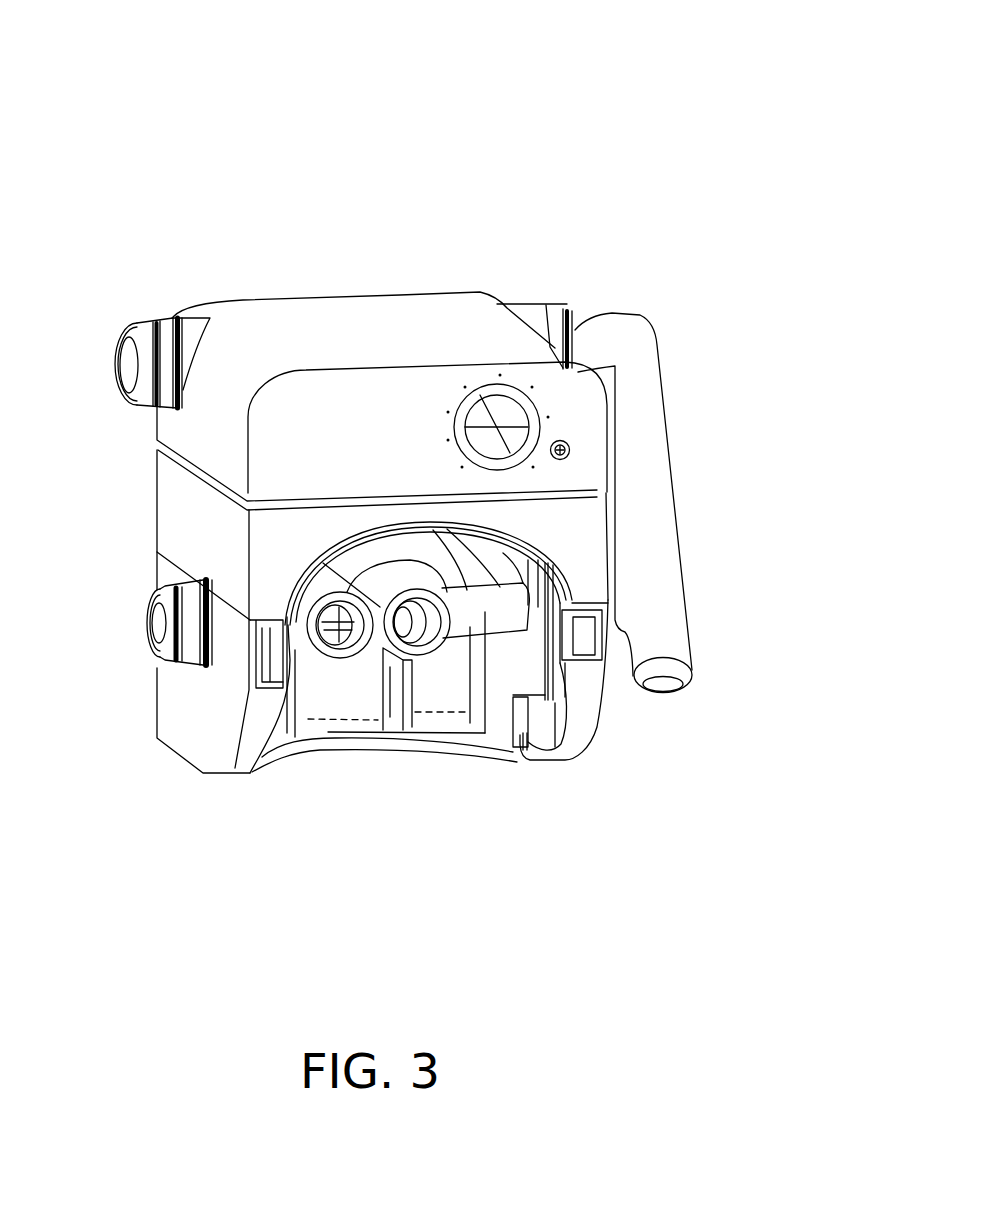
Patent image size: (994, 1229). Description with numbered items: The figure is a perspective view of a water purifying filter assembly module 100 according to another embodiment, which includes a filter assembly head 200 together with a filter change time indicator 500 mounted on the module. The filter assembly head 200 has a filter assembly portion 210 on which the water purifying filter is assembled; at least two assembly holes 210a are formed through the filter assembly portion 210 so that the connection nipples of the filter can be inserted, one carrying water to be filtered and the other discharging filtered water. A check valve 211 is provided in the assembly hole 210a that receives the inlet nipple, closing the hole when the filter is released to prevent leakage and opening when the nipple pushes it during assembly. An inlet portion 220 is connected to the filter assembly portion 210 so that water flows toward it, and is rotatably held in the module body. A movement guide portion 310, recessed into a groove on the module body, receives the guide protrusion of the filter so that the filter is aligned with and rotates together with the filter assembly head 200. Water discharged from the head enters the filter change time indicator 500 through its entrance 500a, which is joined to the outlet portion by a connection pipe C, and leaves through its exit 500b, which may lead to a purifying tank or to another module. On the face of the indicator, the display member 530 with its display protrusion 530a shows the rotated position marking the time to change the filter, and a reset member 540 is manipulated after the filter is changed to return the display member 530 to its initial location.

The water purifying filter assembly module 100 is at (181, 39).
The filter assembly head 200 is at (340, 697).
The filter assembly portion 210 is at (376, 680).
The assembly holes 210a is at (430, 650).
The check valve 211 is at (342, 640).
The inlet portion 220 is at (181, 688).
The movement guide portion 310 is at (523, 747).
The filter change time indicator 500 is at (439, 274).
The entrance 500a is at (567, 303).
The exit 500b is at (128, 333).
The display member 530 is at (533, 408).
The display protrusion 530a is at (457, 418).
The reset member 540 is at (570, 454).
The connection pipe C is at (647, 372).